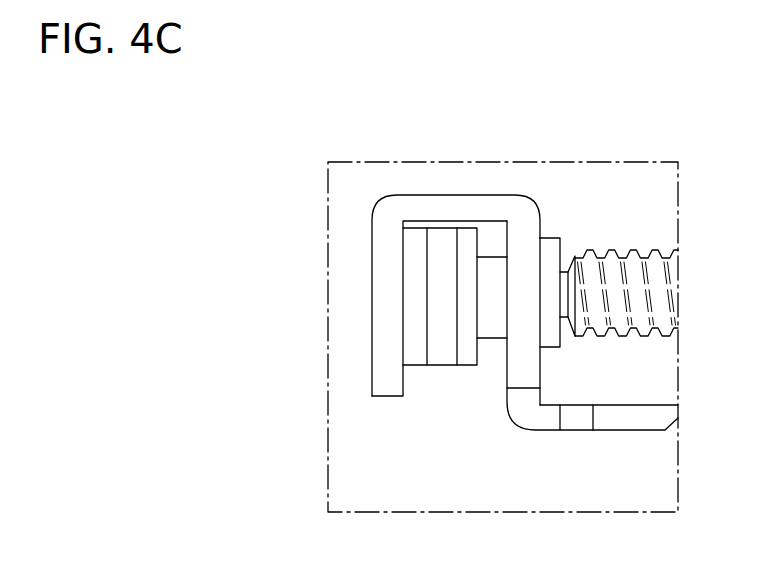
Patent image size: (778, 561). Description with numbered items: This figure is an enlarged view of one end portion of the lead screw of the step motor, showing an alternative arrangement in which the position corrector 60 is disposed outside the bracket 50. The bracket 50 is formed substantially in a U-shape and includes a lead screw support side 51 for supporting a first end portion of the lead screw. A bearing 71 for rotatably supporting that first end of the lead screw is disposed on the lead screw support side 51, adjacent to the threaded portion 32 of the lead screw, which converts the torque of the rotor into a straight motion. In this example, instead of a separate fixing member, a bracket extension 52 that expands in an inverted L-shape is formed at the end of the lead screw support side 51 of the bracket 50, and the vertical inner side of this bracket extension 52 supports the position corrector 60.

The bracket extension 52 is at (407, 205).
The position corrector 60 is at (439, 248).
The bearing 71 is at (551, 242).
The threaded portion 32 is at (614, 251).
The lead screw support side 51 is at (522, 367).
The bracket 50 is at (633, 423).